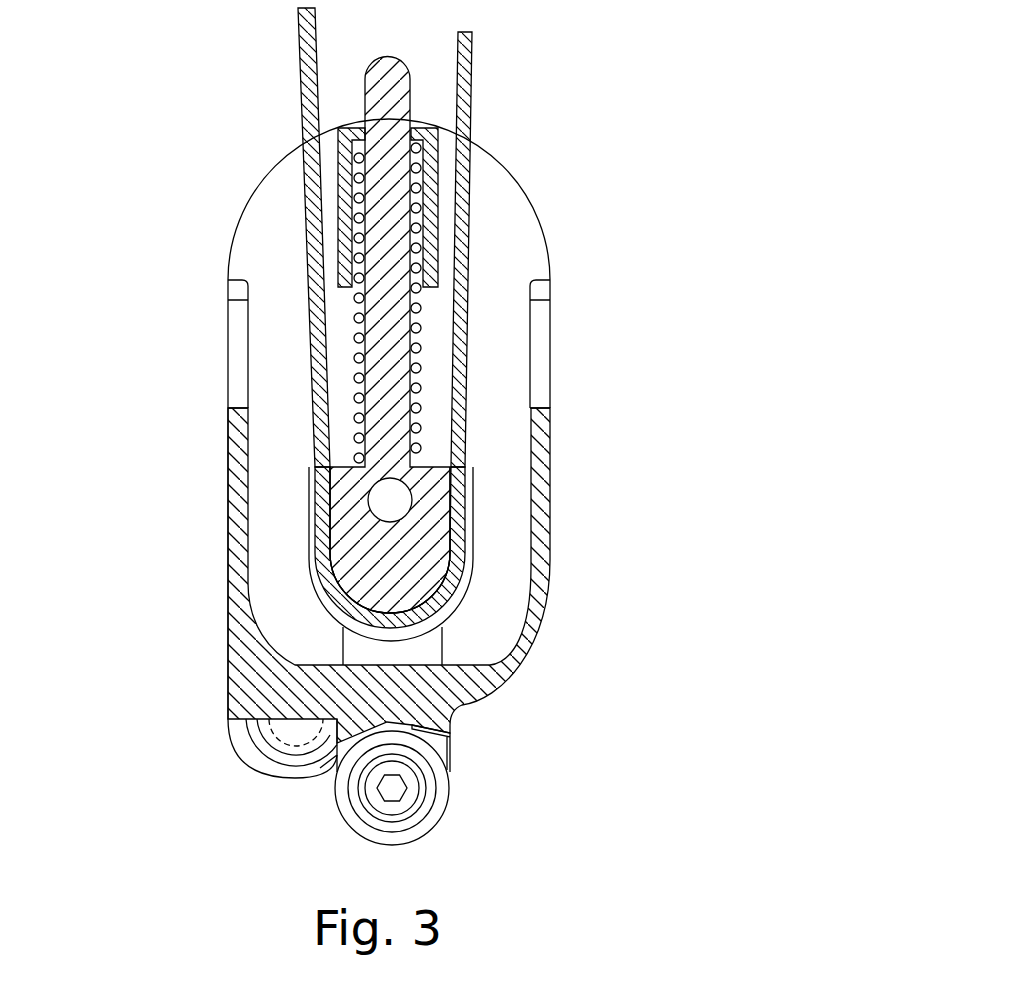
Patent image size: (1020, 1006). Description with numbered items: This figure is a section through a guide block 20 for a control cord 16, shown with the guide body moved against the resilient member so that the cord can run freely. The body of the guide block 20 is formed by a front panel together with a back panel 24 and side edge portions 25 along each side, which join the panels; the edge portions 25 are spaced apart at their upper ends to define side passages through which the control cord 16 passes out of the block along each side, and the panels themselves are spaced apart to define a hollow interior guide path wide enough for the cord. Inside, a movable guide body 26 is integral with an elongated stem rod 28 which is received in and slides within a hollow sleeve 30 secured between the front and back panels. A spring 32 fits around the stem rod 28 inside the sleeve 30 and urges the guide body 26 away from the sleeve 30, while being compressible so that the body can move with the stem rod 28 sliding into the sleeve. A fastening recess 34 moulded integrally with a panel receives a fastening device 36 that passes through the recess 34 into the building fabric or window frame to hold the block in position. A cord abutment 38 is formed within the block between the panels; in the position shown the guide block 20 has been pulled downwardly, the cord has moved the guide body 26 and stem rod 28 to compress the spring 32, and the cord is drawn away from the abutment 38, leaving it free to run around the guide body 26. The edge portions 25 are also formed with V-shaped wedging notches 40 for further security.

The control cord 16 is at (472, 72).
The guide block 20 is at (665, 439).
The back panel 24 is at (505, 207).
The side edge portions 25 is at (228, 513).
The guide body 26 is at (418, 558).
The stem rod 28 is at (393, 232).
The hollow sleeve 30 is at (352, 408).
The spring 32 is at (417, 270).
The fastening recess 34 is at (453, 787).
The fastening device 36 is at (395, 789).
The cord abutment 38 is at (400, 668).
The wedging notches 40 is at (237, 315).